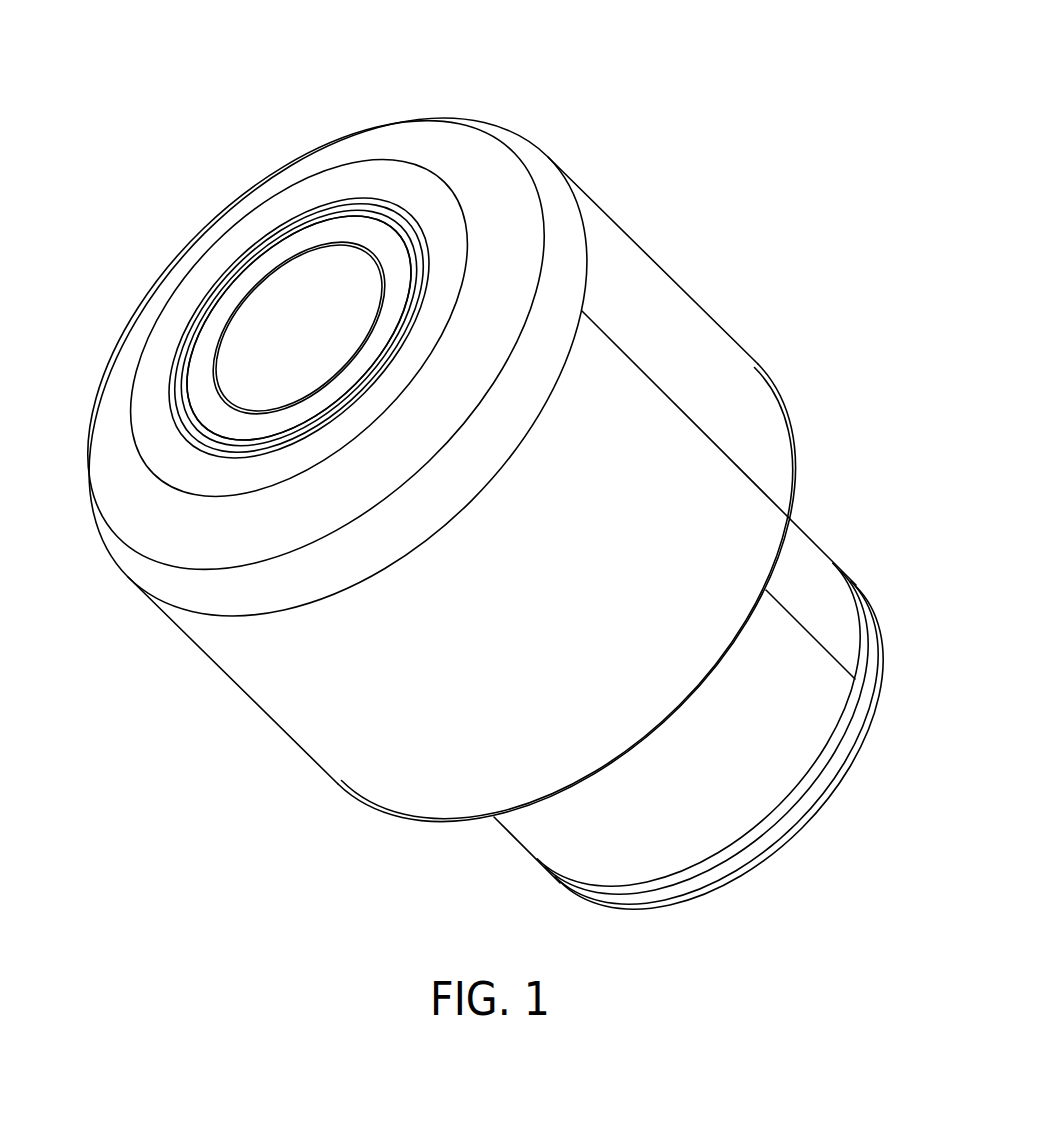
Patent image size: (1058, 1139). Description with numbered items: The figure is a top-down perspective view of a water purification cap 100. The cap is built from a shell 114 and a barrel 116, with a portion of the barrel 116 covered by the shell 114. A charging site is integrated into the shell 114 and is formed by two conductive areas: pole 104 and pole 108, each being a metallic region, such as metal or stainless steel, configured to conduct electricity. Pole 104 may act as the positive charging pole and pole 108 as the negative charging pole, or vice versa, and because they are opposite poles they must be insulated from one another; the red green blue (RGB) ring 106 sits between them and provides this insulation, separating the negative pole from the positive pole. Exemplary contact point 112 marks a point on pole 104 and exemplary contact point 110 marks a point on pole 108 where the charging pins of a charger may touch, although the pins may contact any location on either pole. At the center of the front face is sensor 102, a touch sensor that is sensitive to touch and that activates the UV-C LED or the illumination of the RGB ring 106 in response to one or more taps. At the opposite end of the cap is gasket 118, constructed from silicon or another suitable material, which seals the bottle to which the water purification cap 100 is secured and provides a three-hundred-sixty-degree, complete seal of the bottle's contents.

The water purification cap 100 is at (473, 465).
The sensor 102 is at (237, 349).
The pole 104 is at (235, 291).
The RGB ring 106 is at (270, 240).
The pole 108 is at (318, 188).
The exemplary contact point 110 is at (262, 474).
The exemplary contact point 112 is at (276, 424).
The shell 114 is at (701, 308).
The barrel 116 is at (812, 549).
The gasket 118 is at (859, 602).